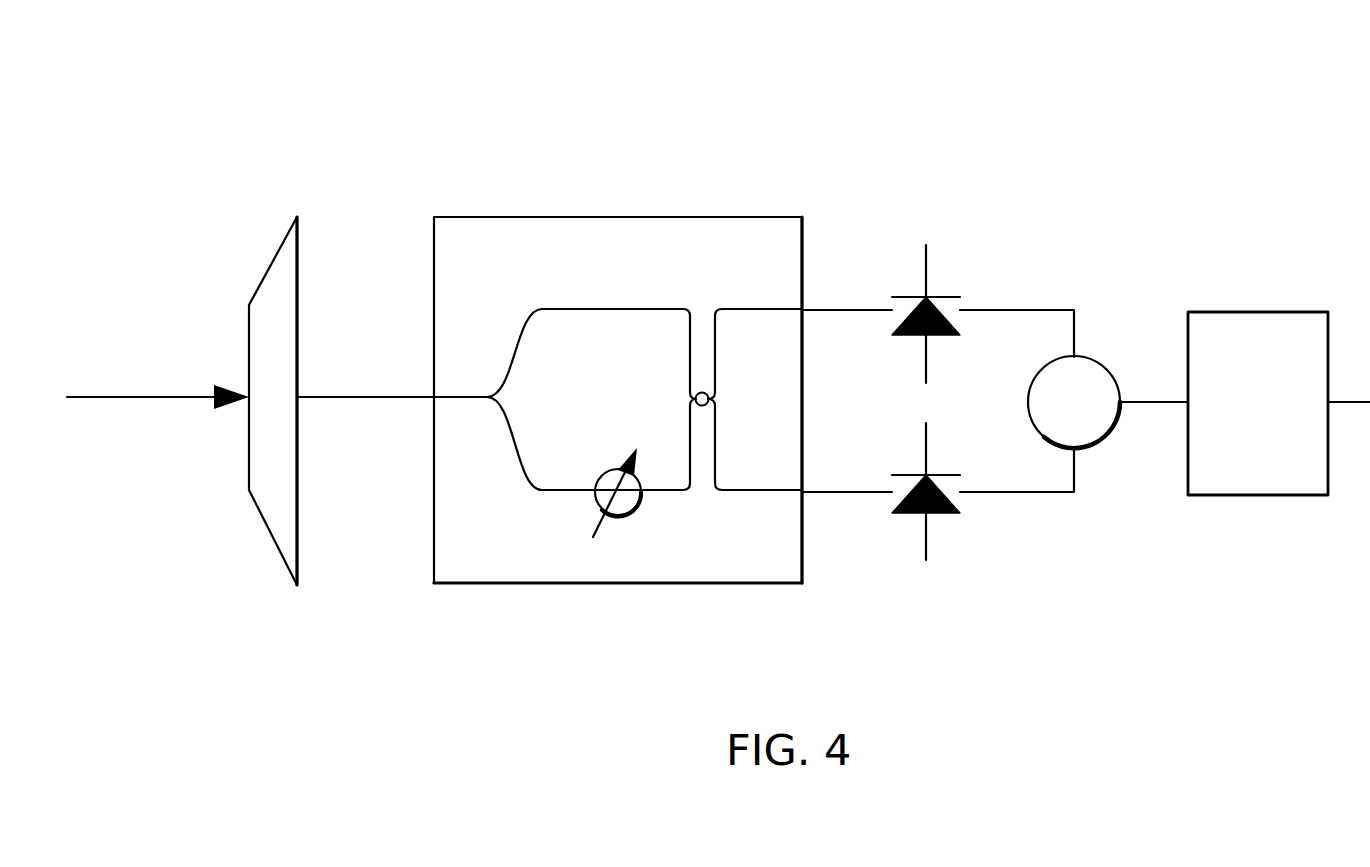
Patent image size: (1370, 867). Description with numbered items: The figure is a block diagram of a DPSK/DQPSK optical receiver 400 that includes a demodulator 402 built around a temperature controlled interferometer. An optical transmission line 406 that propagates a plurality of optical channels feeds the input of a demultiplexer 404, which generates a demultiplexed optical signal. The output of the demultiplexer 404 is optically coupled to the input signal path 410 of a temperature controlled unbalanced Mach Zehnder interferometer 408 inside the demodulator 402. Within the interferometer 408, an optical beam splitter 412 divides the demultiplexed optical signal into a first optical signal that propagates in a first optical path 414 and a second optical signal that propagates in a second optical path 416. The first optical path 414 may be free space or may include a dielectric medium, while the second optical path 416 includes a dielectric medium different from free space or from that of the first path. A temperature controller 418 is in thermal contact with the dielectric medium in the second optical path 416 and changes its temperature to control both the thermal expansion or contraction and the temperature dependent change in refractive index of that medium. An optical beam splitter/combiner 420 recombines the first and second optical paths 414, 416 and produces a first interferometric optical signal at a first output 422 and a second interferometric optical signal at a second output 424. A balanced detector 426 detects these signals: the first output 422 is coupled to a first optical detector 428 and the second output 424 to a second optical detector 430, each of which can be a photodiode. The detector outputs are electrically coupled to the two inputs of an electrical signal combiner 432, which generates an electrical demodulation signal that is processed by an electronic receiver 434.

The DPSK/DQPSK optical receiver 400 is at (899, 79).
The demodulator 402 is at (617, 215).
The demultiplexer 404 is at (284, 235).
The optical transmission line 406 is at (150, 400).
The temperature controlled unbalanced Mach Zehnder interferometer 408 is at (602, 276).
The input signal path 410 is at (432, 400).
The optical beam splitter 412 is at (505, 390).
The first optical path 414 is at (640, 307).
The second optical path 416 is at (567, 487).
The temperature controller 418 is at (636, 511).
The optical beam splitter/combiner 420 is at (694, 399).
The first output 422 is at (838, 308).
The second output 424 is at (850, 496).
The balanced detector 426 is at (935, 572).
The first optical detector 428 is at (940, 296).
The second optical detector 430 is at (945, 512).
The electrical signal combiner 432 is at (1052, 416).
The electronic receiver 434 is at (1236, 416).